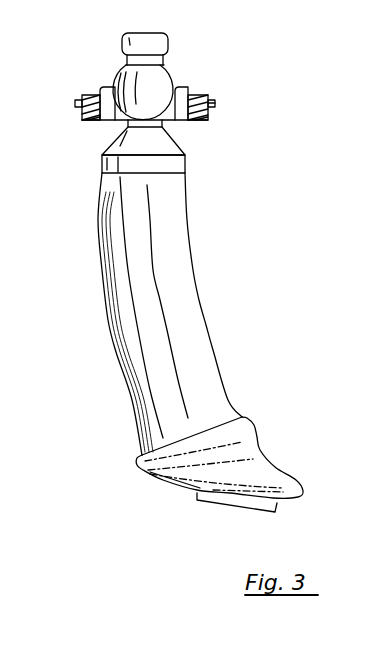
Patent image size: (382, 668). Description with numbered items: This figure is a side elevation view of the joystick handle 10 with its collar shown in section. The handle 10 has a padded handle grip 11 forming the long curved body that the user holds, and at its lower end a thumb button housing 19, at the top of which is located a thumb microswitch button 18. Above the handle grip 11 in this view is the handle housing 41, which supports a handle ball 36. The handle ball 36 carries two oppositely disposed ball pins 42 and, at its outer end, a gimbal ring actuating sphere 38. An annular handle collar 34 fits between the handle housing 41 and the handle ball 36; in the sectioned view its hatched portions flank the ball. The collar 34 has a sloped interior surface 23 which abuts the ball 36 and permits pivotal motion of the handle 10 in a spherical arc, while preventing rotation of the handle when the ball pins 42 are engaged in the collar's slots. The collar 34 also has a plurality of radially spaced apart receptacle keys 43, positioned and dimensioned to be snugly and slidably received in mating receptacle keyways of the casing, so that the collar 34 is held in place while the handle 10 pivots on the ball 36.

The handle 10 is at (159, 314).
The padded handle grip 11 is at (118, 293).
The thumb microswitch button 18 is at (212, 500).
The thumb button housing 19 is at (148, 468).
The sloped interior surface 23 is at (167, 127).
The annular handle collar 34 is at (203, 122).
The handle ball 36 is at (113, 82).
The gimbal ring actuating sphere 38 is at (123, 43).
The handle housing 41 is at (102, 163).
The ball pins 42 is at (182, 88).
The receptacle keys 43 is at (217, 103).